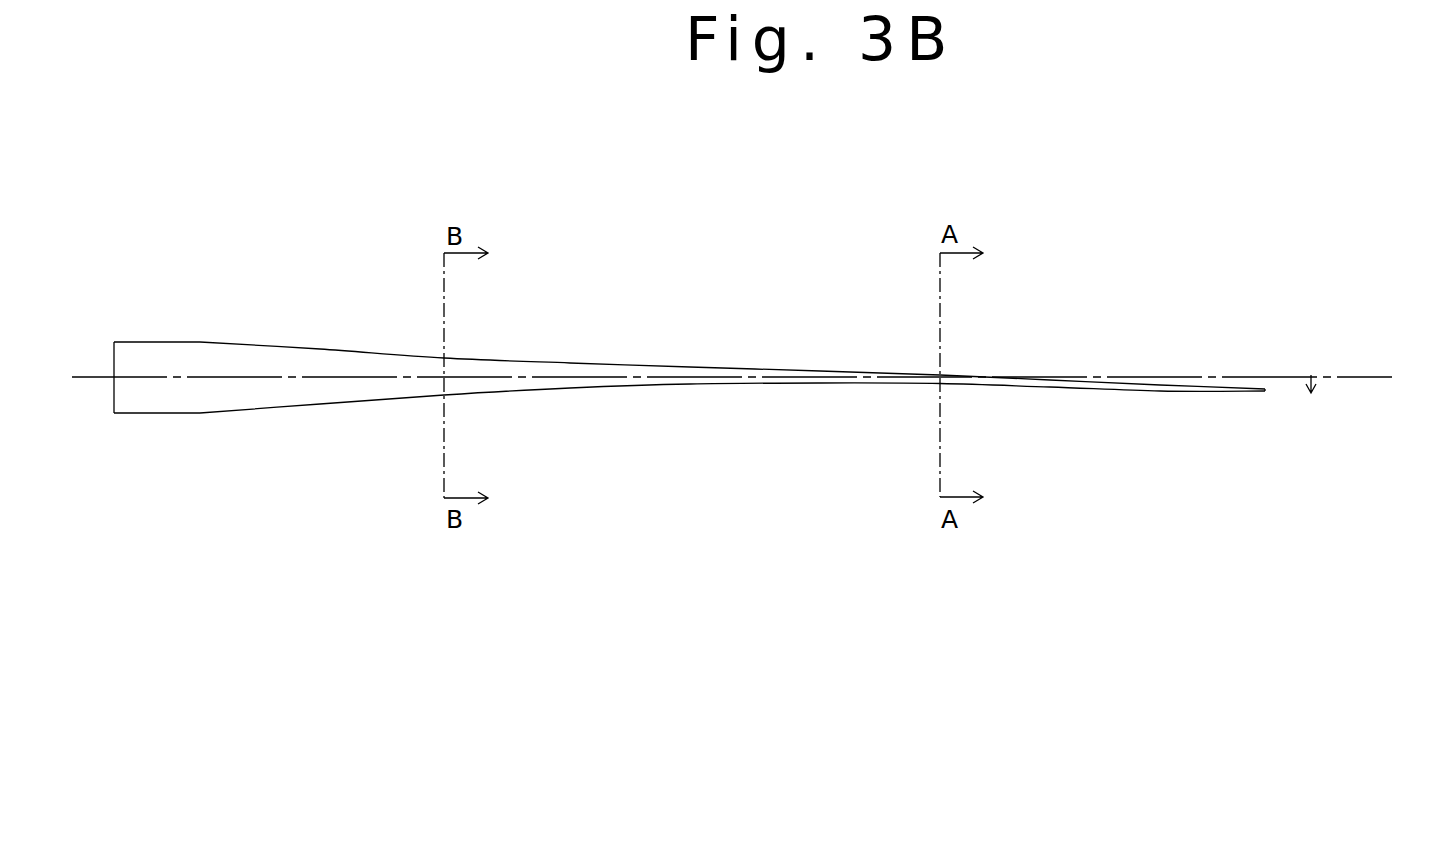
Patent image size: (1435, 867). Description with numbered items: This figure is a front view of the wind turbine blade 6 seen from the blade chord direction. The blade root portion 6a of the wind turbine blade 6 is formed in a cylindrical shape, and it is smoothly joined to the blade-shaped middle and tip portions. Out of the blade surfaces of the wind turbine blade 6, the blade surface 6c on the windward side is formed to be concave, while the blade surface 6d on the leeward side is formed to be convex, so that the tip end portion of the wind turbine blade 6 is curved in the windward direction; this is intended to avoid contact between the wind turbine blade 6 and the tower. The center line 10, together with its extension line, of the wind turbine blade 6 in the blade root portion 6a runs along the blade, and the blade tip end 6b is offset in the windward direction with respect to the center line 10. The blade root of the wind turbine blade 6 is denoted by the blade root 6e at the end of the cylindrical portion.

The wind turbine blade 6 is at (698, 365).
The blade root portion 6a is at (198, 331).
The blade tip end 6b is at (1265, 392).
The blade surface on the windward side 6c is at (608, 363).
The blade surface on the leeward side 6d is at (567, 390).
The blade root 6e is at (111, 394).
The center line 10 is at (1352, 374).